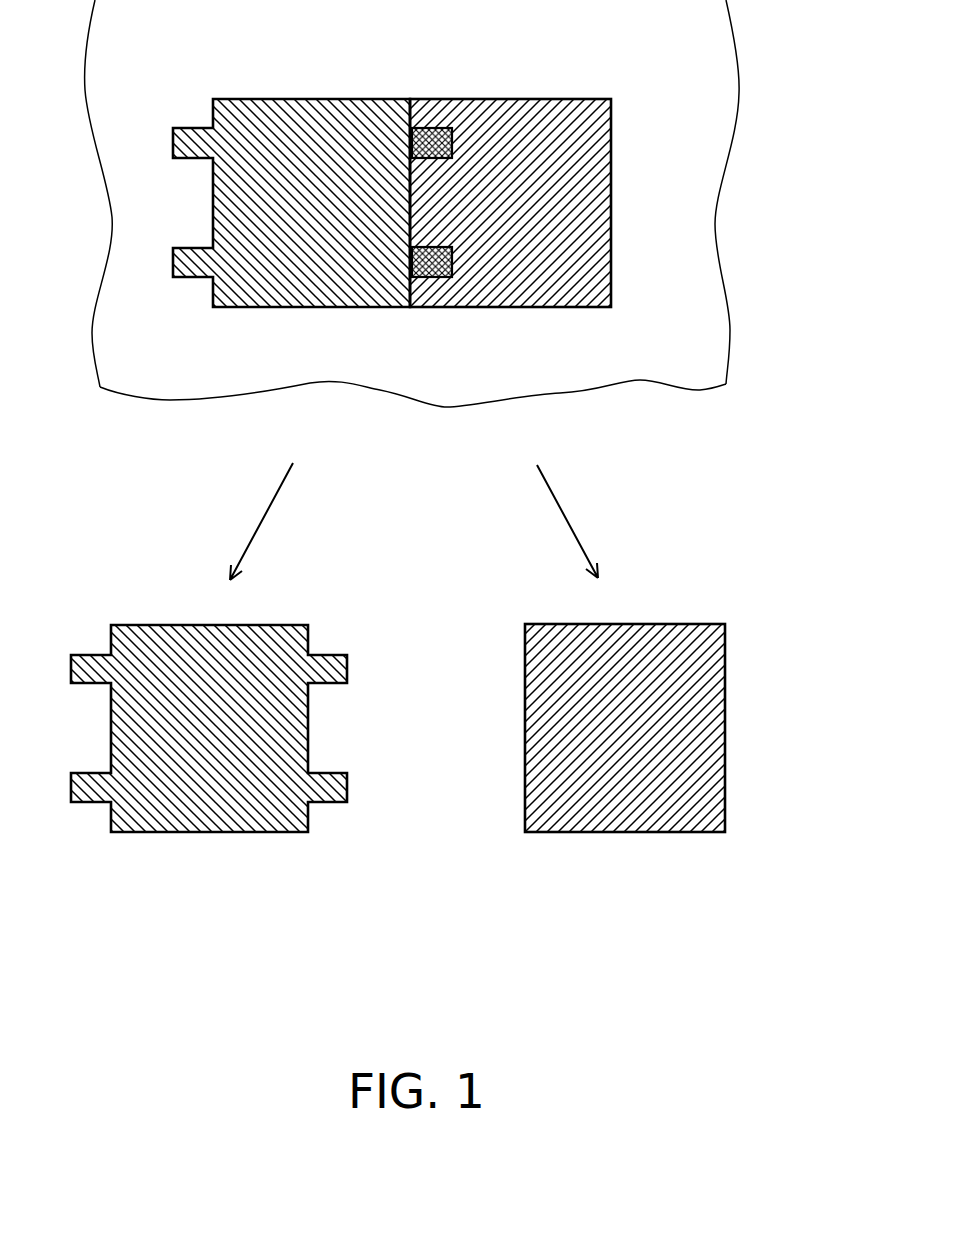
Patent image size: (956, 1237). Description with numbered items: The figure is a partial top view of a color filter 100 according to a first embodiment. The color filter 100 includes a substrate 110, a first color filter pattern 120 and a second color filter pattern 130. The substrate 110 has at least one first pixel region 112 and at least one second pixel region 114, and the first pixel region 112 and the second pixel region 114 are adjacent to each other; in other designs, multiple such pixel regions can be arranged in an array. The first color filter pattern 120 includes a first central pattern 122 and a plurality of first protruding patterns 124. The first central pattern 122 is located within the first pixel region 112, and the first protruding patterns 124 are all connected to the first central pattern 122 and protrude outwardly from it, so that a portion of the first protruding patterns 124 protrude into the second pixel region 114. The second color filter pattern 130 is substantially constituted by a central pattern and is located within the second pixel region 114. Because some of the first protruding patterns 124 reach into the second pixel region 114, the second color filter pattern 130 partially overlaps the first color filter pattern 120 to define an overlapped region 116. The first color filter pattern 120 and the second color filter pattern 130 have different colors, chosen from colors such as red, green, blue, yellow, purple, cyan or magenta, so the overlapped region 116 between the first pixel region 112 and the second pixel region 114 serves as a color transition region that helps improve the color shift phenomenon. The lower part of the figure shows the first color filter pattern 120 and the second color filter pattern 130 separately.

The color filter 100 is at (445, 477).
The substrate 110 is at (700, 332).
The first pixel region 112 is at (410, 66).
The second pixel region 114 is at (610, 66).
The overlapped region 116 is at (437, 260).
The first color filter pattern 120 is at (240, 527).
The first central pattern 122 is at (170, 800).
The first protruding patterns 124 is at (322, 785).
The second color filter pattern 130 is at (542, 153).